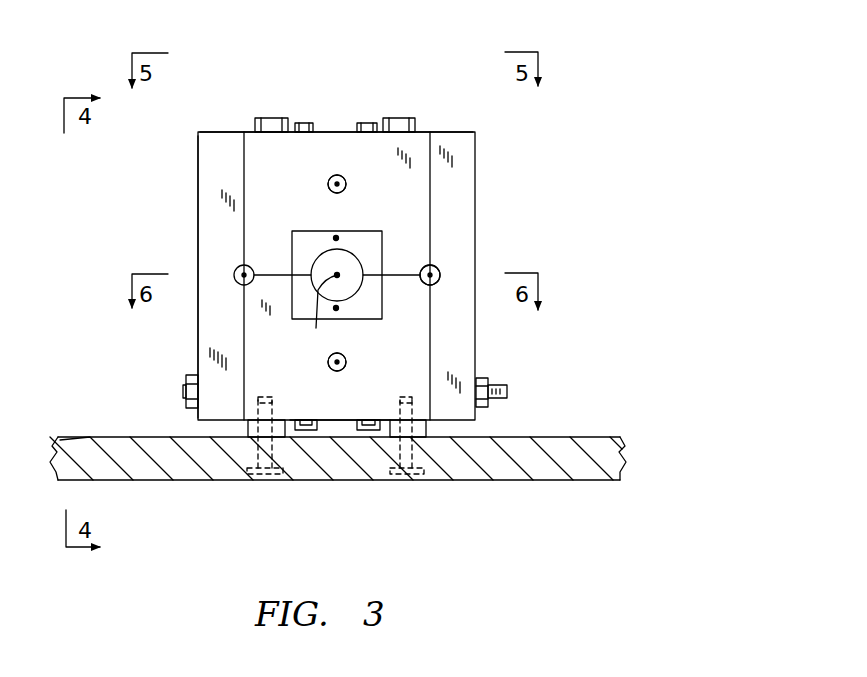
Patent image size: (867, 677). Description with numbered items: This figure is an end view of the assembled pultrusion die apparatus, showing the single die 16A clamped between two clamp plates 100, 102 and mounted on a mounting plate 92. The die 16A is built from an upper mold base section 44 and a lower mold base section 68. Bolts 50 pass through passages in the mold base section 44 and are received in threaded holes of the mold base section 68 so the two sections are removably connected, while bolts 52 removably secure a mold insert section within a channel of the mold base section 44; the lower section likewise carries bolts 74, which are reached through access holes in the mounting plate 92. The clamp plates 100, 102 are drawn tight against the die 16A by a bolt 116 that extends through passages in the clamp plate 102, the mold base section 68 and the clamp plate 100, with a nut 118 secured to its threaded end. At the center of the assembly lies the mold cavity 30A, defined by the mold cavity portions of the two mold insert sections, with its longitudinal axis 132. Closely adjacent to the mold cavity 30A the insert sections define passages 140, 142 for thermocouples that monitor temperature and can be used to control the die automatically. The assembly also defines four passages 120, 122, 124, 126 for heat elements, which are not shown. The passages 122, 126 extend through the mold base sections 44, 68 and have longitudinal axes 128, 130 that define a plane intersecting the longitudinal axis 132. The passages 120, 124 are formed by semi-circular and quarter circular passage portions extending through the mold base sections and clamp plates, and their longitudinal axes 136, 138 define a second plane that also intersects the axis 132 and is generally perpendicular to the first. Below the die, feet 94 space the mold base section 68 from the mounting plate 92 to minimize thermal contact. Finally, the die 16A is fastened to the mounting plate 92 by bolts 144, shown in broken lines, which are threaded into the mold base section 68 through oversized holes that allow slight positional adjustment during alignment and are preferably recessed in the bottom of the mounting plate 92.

The die 16A is at (406, 58).
The mold base section 44 is at (336, 144).
The bolts 50 is at (266, 118).
The bolts 52 is at (304, 123).
The clamp plate 100 is at (466, 170).
The clamp plate 102 is at (206, 176).
The passage 120 is at (198, 308).
The passage 122 is at (330, 180).
The longitudinal axis 128 is at (344, 190).
The passage 140 is at (336, 238).
The mold cavity 30A is at (350, 262).
The longitudinal axis 136 is at (236, 272).
The passage 124 is at (440, 268).
The longitudinal axis 138 is at (438, 282).
The longitudinal axis 132 is at (308, 314).
The passage 142 is at (336, 308).
The passage 126 is at (328, 364).
The longitudinal axis 130 is at (346, 362).
The bolt 116 is at (190, 388).
The nut 118 is at (490, 378).
The feet 94 is at (250, 430).
The bolts 74 is at (305, 432).
The mold base section 68 is at (335, 408).
The bolts 144 is at (256, 485).
The mounting plate 92 is at (508, 473).